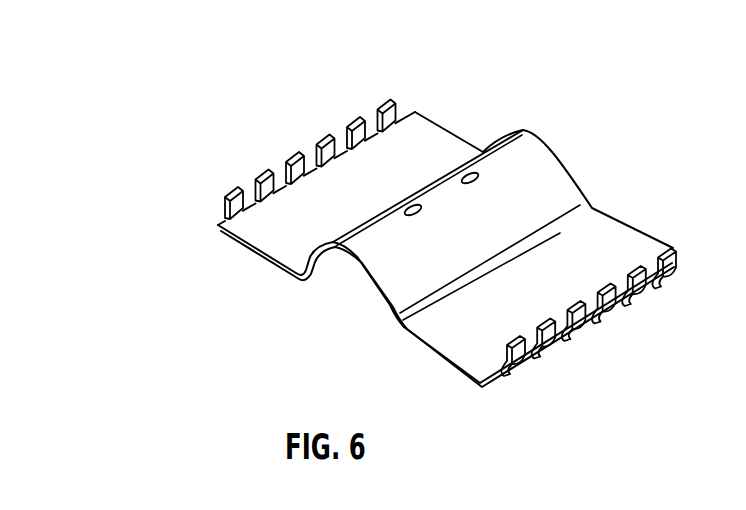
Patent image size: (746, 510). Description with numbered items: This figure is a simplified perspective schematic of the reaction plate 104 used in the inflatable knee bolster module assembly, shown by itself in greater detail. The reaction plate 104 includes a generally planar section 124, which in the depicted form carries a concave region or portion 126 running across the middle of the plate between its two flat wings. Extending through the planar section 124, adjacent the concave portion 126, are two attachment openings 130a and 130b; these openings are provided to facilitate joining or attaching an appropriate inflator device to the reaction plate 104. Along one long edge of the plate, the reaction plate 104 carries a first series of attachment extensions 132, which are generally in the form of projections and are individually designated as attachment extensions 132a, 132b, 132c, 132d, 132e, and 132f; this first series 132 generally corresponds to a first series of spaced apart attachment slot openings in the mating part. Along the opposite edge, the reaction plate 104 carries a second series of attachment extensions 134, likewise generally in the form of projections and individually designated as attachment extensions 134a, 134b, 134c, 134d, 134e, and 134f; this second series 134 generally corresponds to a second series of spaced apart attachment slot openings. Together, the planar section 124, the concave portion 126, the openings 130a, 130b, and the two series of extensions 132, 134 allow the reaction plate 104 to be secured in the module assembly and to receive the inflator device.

The reaction plate 104 is at (441, 247).
The generally planar section 124 is at (473, 140).
The concave region or portion 126 is at (368, 280).
The attachment opening 130a is at (412, 213).
The attachment opening 130b is at (477, 174).
The first series of attachment extensions 132 is at (269, 115).
The attachment extension 132a is at (227, 180).
The attachment extension 132b is at (259, 170).
The attachment extension 132c is at (292, 160).
The attachment extension 132d is at (322, 130).
The attachment extension 132e is at (351, 118).
The attachment extension 132f is at (383, 102).
The second series of attachment extensions 134 is at (620, 366).
The attachment extension 134a is at (516, 370).
The attachment extension 134b is at (547, 355).
The attachment extension 134c is at (574, 337).
The attachment extension 134d is at (610, 318).
The attachment extension 134e is at (641, 300).
The attachment extension 134f is at (674, 279).